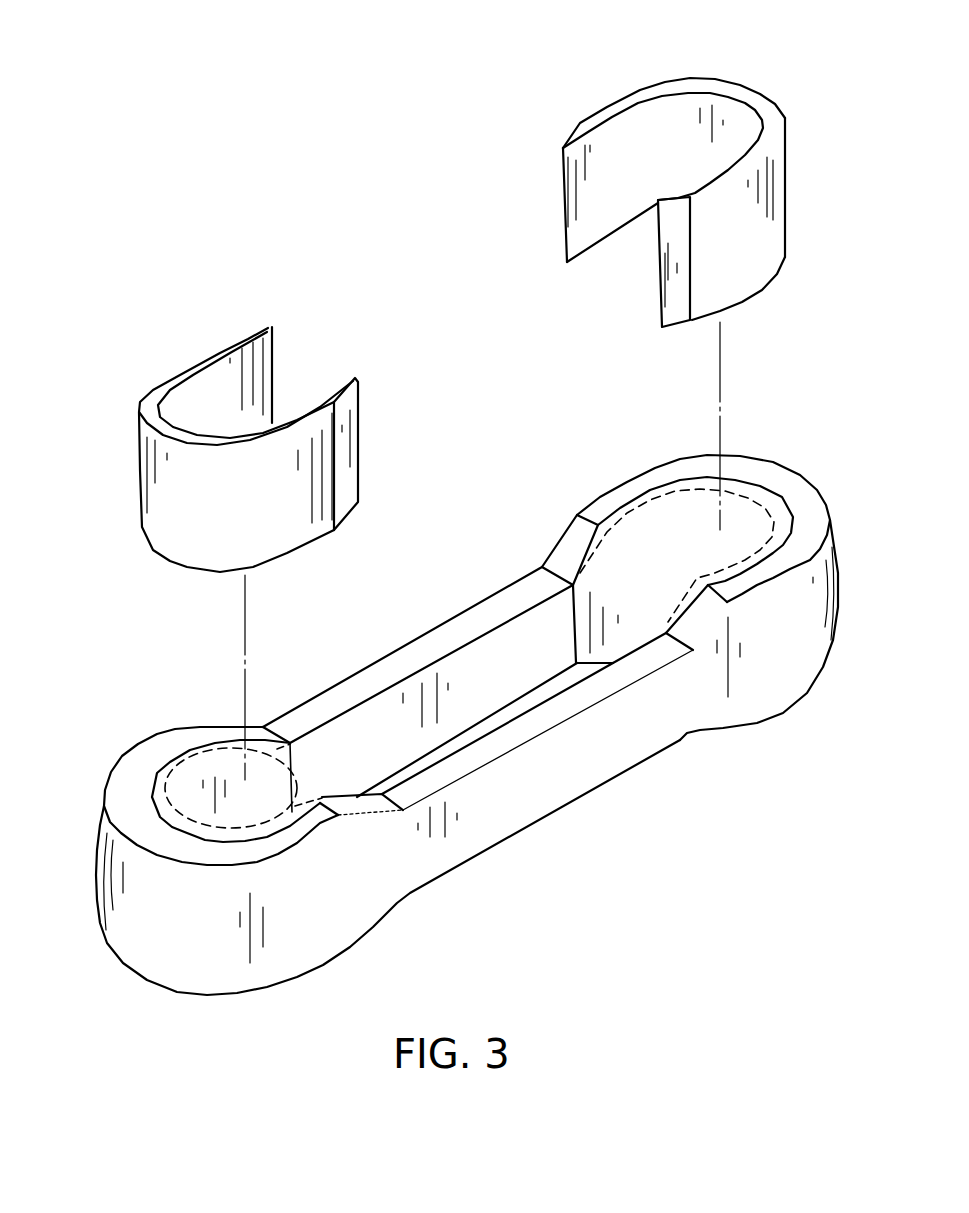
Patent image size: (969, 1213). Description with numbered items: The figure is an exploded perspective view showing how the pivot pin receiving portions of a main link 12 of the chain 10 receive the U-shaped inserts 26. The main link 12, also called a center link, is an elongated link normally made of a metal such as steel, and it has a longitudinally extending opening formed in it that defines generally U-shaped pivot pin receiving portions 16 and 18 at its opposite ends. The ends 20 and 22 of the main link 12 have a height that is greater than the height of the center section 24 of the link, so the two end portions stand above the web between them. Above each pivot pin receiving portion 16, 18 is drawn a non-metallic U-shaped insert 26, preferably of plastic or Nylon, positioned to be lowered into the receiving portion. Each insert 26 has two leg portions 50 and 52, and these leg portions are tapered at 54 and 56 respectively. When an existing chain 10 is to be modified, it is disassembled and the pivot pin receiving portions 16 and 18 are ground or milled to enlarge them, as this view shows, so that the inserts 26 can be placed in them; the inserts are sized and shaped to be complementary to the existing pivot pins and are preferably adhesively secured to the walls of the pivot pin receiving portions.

The chain 10 is at (467, 583).
The main link 12 is at (520, 835).
The pivot pin receiving portion 16 is at (227, 790).
The pivot pin receiving portion 18 is at (668, 532).
The end of main link 20 is at (177, 945).
The end of main link 22 is at (797, 633).
The center section 24 is at (569, 778).
The U-shaped insert 26 is at (770, 83).
The leg portion 50 is at (622, 158).
The leg portion 52 is at (738, 220).
The tapered portion 54 is at (560, 173).
The tapered portion 56 is at (677, 260).